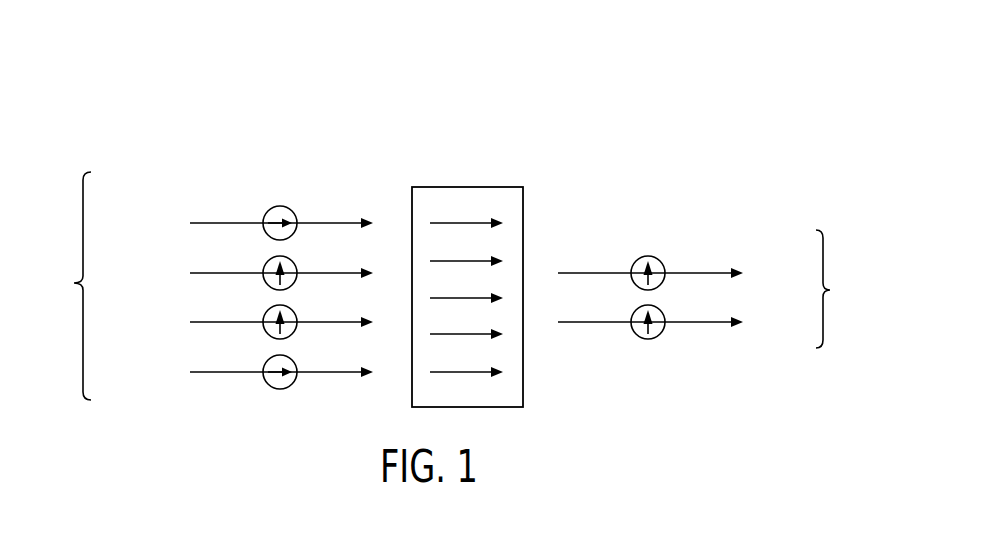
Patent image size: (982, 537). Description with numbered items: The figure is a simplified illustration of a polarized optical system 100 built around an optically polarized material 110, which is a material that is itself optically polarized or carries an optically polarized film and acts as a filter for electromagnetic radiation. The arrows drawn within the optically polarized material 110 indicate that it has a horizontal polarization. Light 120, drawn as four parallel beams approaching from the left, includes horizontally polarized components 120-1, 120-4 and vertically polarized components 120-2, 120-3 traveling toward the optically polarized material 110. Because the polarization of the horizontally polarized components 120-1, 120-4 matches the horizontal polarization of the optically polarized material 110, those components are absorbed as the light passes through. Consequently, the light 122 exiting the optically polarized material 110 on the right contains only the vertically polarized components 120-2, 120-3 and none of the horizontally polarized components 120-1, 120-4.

The polarized optical system 100 is at (326, 81).
The optically polarized material 110 is at (437, 187).
The light 120 is at (64, 286).
The horizontally polarized component 120-1 is at (210, 222).
The vertically polarized component 120-2 is at (210, 272).
The vertically polarized component 120-3 is at (210, 321).
The horizontally polarized component 120-4 is at (210, 371).
The light exiting the optically polarized material 122 is at (843, 289).